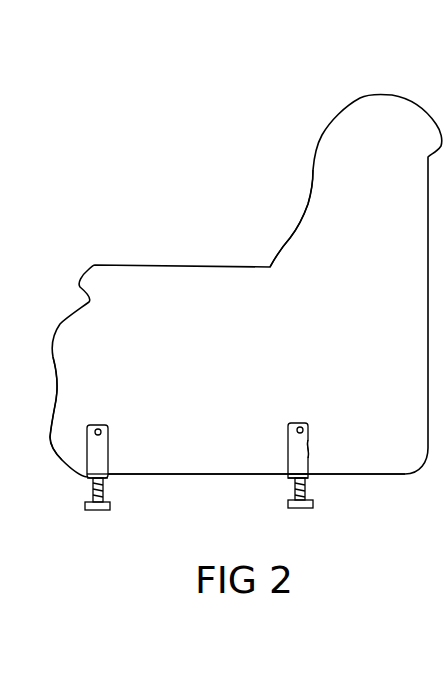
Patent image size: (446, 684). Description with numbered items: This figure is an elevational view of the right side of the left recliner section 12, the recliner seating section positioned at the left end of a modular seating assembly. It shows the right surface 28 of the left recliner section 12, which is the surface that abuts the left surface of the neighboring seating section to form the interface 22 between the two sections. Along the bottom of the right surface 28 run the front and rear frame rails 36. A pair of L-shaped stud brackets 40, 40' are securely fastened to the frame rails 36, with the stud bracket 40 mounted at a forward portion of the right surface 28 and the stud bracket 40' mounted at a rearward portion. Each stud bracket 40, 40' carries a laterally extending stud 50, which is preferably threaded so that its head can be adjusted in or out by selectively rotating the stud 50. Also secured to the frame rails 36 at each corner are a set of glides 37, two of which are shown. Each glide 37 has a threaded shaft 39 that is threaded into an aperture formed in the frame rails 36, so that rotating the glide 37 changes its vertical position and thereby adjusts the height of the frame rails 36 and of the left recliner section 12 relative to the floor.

The left recliner section 12 is at (390, 97).
The interface 22 is at (195, 447).
The right surface 28 is at (232, 282).
The frame rails 36 is at (83, 483).
The glide 37 is at (95, 511).
The threaded shaft 39 is at (104, 493).
The stud bracket 40 is at (76, 408).
The stud bracket 40' is at (340, 452).
The stud 50 is at (102, 425).